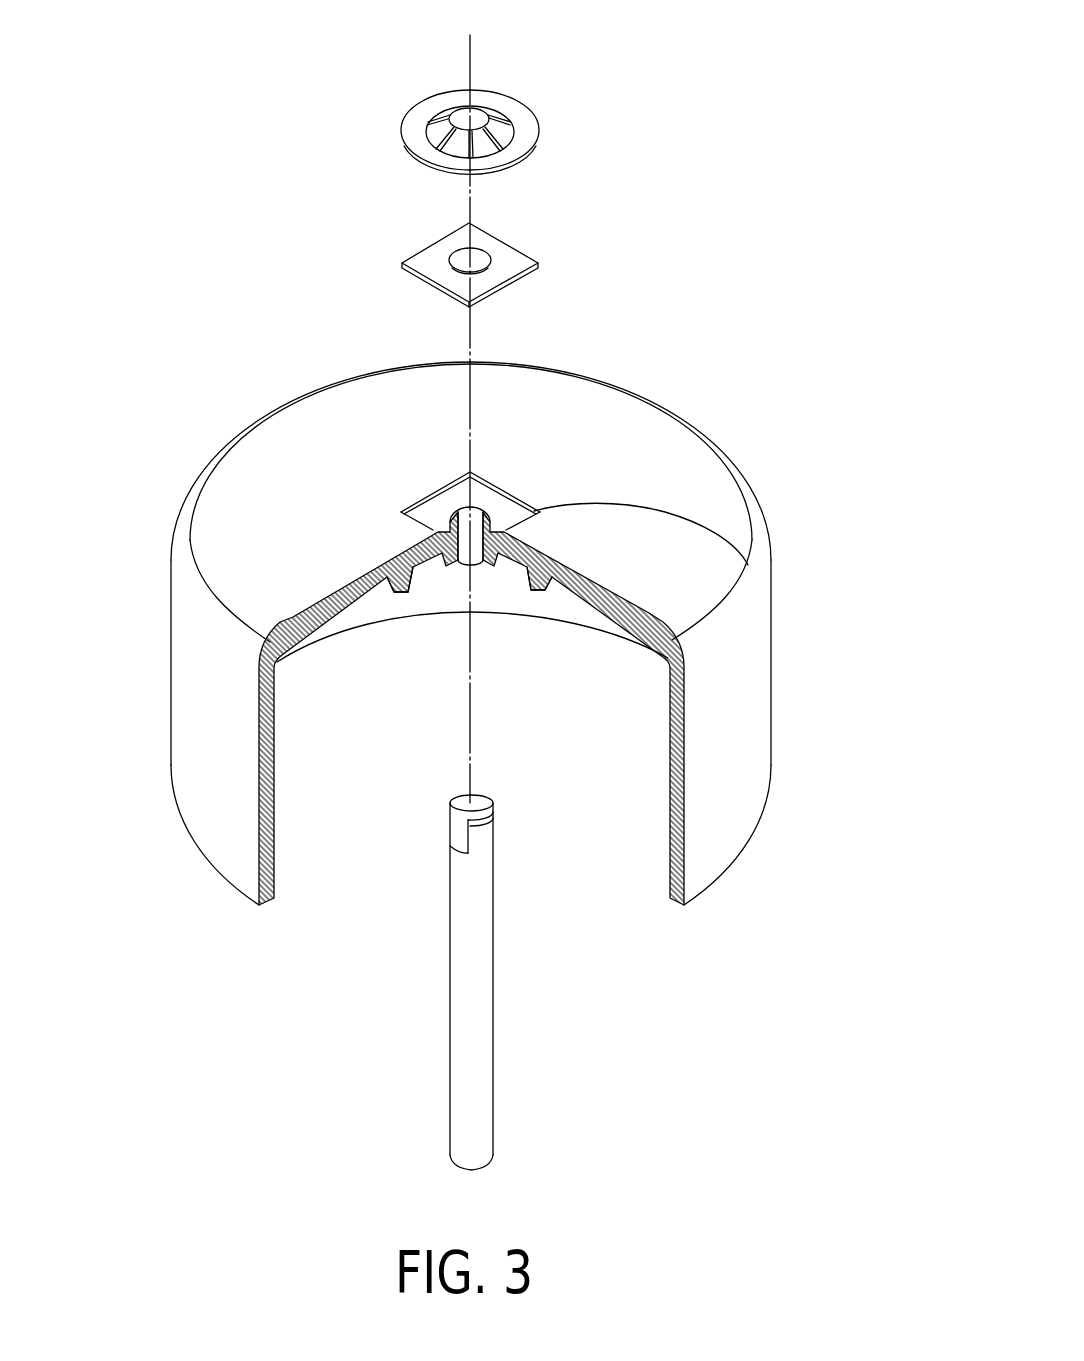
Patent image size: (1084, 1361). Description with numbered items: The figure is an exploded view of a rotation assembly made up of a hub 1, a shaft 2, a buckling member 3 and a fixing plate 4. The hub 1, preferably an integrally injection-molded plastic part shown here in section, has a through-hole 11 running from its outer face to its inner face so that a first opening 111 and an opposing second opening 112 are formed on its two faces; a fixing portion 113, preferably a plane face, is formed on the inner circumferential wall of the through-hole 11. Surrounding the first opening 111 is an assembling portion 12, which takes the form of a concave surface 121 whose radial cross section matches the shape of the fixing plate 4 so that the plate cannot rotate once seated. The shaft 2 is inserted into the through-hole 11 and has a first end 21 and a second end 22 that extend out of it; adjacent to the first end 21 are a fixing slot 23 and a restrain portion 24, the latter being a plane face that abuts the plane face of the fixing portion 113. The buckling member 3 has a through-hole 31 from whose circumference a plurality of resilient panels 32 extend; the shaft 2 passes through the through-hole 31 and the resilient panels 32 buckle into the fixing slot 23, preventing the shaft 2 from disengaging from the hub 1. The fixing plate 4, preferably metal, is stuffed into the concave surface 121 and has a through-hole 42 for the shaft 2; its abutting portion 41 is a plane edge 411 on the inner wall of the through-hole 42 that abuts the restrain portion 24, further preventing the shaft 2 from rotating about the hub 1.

The hub 1 is at (479, 611).
The through-hole 11 is at (458, 611).
The first opening 111 is at (483, 512).
The second opening 112 is at (479, 550).
The fixing portion 113 is at (450, 519).
The assembling portion 12 is at (537, 492).
The concave surface 121 is at (585, 504).
The shaft 2 is at (483, 970).
The first end 21 is at (500, 795).
The second end 22 is at (502, 1172).
The fixing slot 23 is at (492, 830).
The restrain portion 24 is at (460, 829).
The buckling member 3 is at (505, 119).
The through-hole 31 is at (478, 112).
The resilient panels 32 is at (497, 127).
The fixing plate 4 is at (478, 229).
The abutting portion 41 is at (452, 270).
The plane edge 411 is at (460, 258).
The through-hole 42 is at (463, 255).